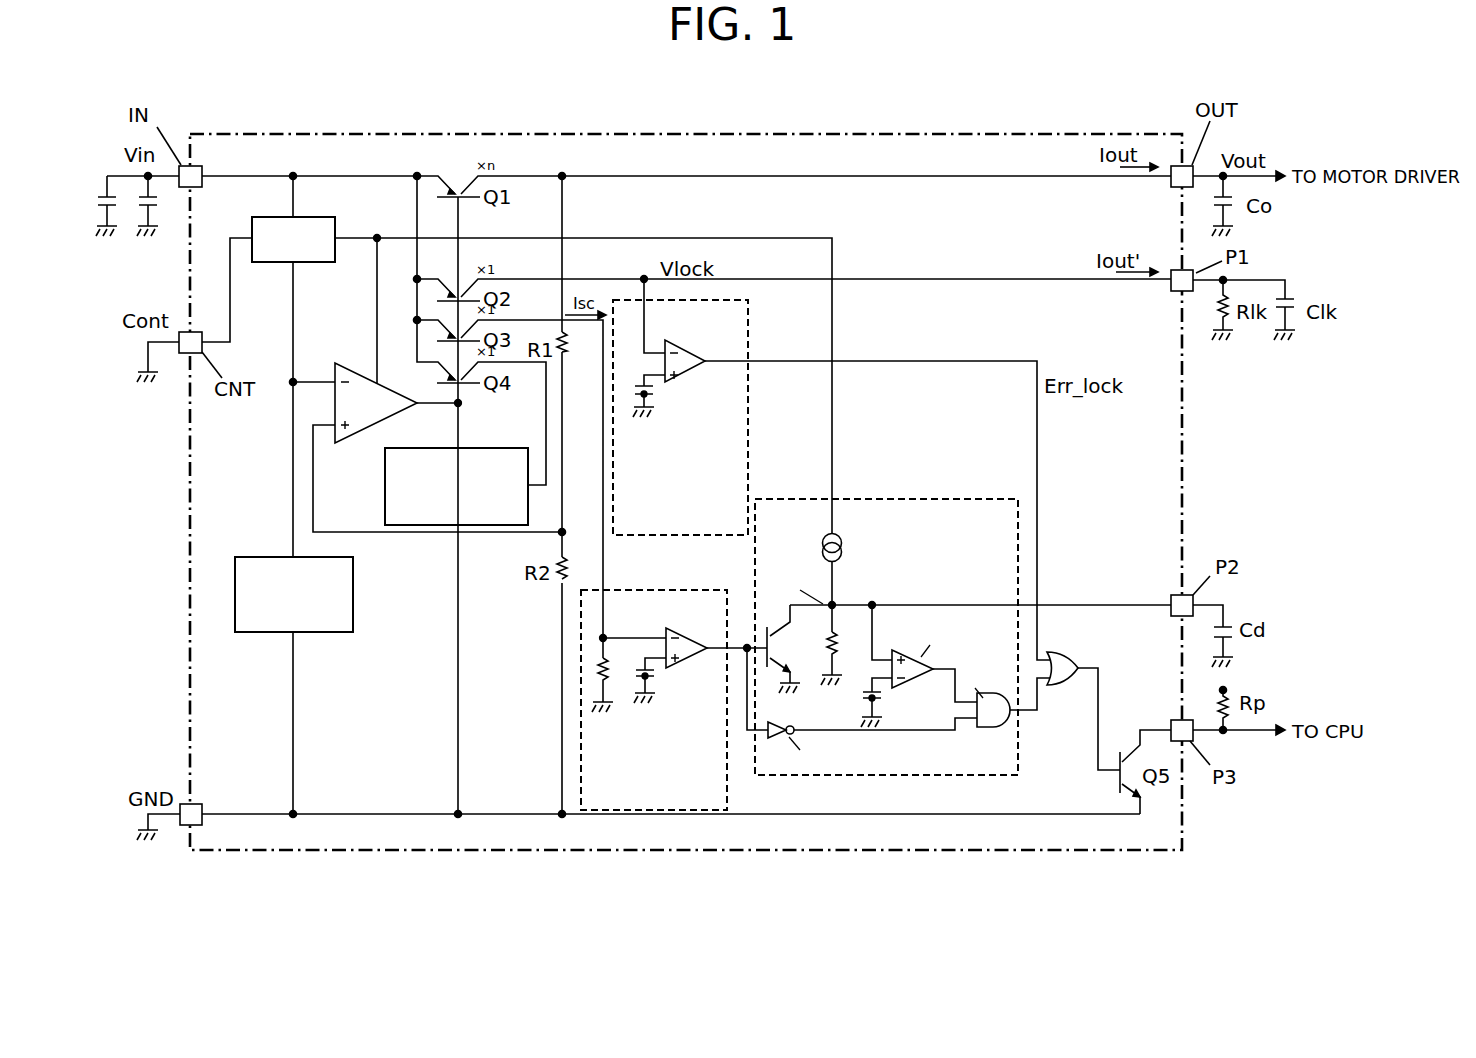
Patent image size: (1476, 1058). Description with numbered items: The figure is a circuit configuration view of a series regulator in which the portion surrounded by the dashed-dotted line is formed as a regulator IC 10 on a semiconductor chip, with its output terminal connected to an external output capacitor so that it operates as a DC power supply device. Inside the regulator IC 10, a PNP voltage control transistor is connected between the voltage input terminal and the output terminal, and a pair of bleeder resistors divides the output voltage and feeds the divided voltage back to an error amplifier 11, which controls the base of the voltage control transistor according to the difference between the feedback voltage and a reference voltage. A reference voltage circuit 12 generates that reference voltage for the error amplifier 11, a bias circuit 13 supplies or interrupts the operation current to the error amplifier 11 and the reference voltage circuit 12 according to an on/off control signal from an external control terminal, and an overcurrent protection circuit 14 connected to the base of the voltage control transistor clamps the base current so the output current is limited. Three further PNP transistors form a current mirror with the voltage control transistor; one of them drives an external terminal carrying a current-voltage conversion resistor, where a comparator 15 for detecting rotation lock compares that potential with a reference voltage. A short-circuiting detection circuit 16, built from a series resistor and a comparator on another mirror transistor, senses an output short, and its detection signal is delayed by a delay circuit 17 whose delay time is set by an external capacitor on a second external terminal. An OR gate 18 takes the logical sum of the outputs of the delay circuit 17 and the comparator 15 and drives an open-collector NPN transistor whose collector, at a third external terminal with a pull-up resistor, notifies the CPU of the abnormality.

The regulator IC 10 is at (567, 128).
The error amplifier 11 is at (357, 372).
The reference voltage circuit 12 is at (260, 554).
The bias circuit 13 is at (325, 216).
The overcurrent protection circuit 14 is at (383, 490).
The comparator for detecting rotation lock 15 is at (683, 351).
The short-circuiting detection circuit 16 is at (677, 591).
The delay circuit 17 is at (975, 498).
The OR gate 18 is at (1073, 660).